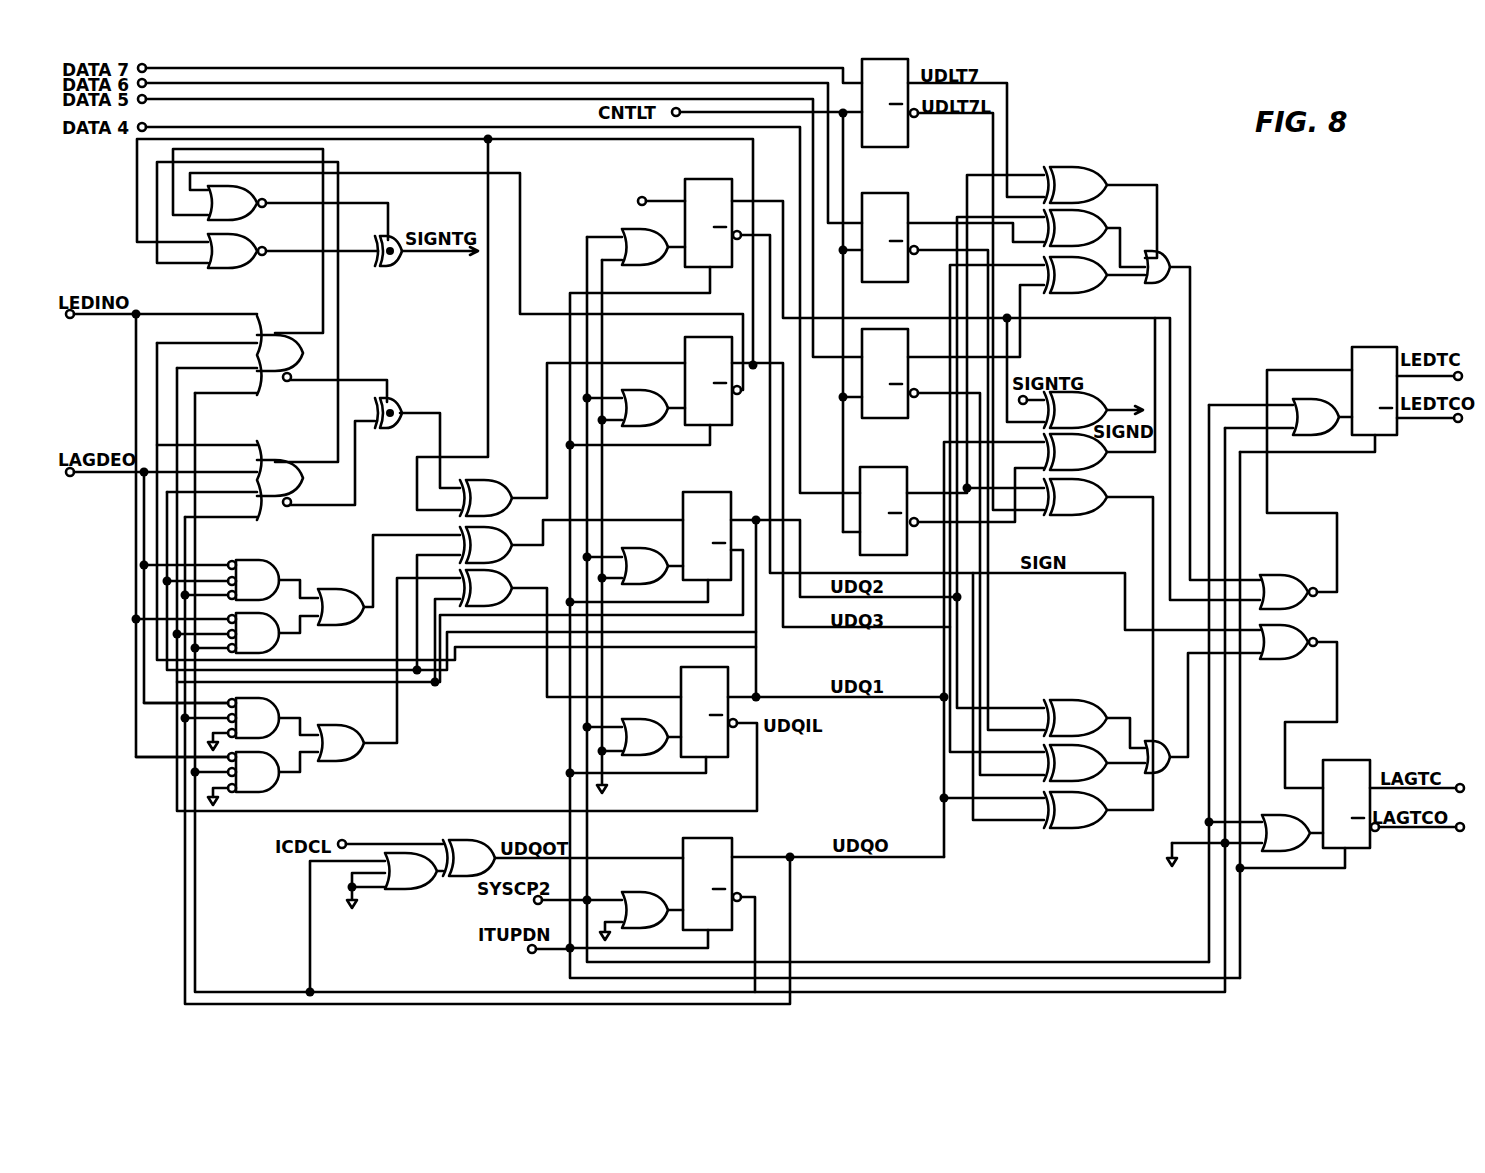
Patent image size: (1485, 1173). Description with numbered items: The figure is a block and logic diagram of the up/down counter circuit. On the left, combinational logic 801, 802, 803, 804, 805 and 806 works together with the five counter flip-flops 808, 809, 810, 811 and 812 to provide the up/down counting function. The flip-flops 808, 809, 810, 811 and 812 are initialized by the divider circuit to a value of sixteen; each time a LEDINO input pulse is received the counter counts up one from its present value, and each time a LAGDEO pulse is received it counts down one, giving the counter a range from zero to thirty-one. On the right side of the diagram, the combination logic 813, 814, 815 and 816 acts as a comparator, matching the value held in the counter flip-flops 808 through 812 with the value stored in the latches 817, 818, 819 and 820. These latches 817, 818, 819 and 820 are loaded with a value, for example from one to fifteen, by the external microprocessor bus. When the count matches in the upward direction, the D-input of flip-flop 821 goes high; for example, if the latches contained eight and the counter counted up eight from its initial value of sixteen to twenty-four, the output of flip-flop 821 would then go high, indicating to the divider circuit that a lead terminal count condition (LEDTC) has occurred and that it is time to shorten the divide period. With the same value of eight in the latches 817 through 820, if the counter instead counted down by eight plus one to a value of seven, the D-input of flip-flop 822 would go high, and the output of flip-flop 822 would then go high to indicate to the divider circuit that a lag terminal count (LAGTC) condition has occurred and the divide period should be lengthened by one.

The combinational logic 801 is at (252, 227).
The combinational logic 802 is at (274, 336).
The combinational logic 803 is at (275, 460).
The combinational logic 804 is at (313, 575).
The combinational logic 805 is at (316, 714).
The combinational logic 806 is at (432, 900).
The flip-flop 808 is at (704, 178).
The flip-flop 809 is at (684, 340).
The flip-flop 810 is at (690, 492).
The flip-flop 811 is at (680, 672).
The flip-flop 812 is at (680, 840).
The combination logic 813 is at (1126, 171).
The combination logic 814 is at (1109, 396).
The combination logic 815 is at (1099, 698).
The combination logic 816 is at (1325, 614).
The latch 817 is at (911, 137).
The latch 818 is at (888, 283).
The latch 819 is at (877, 420).
The latch 820 is at (870, 557).
The flip-flop 821 is at (1368, 345).
The flip-flop 822 is at (1350, 757).